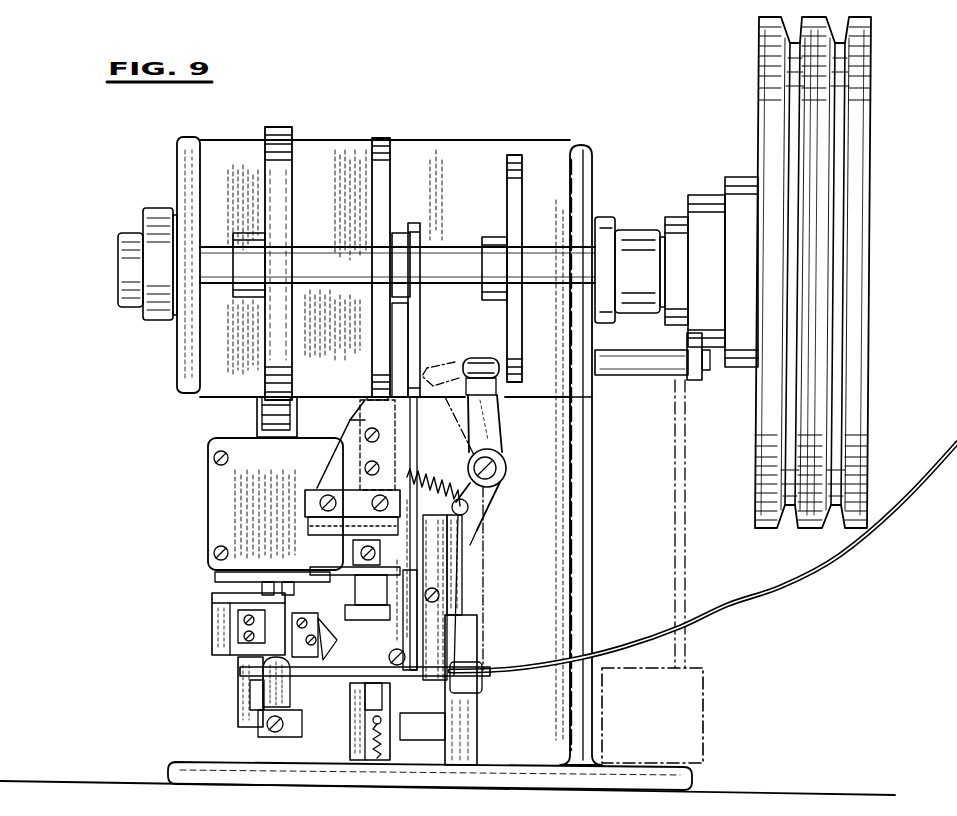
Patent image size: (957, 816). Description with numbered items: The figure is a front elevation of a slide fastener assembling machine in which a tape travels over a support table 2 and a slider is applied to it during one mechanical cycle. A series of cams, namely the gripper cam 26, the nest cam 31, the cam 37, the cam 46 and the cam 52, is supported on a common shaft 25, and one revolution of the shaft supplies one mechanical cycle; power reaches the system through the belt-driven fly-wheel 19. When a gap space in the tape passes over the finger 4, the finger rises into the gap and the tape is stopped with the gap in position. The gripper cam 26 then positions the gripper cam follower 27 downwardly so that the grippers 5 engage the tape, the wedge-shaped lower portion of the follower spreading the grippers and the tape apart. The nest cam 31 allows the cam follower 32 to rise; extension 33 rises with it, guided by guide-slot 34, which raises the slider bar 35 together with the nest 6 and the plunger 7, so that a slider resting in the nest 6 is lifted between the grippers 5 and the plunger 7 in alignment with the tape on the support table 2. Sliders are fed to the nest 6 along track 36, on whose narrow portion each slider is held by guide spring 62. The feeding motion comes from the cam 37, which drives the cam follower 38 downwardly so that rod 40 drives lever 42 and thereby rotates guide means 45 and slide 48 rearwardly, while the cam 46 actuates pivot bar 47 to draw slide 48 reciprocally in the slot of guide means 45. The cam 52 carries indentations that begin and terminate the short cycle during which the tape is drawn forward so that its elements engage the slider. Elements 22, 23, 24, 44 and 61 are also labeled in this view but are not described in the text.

The support table 2 is at (212, 600).
The finger 4 is at (290, 580).
The grippers 5 is at (288, 575).
The nest 6 is at (265, 692).
The plunger 7 is at (255, 668).
The fly-wheel 19 is at (862, 146).
The hub flange 22 is at (706, 202).
The motor (phantom) 23 is at (703, 688).
The motor shaft (phantom) 24 is at (686, 462).
The common shaft 25 is at (318, 250).
The gripper cam 26 is at (292, 177).
The gripper cam follower 27 is at (257, 414).
The nest cam 31 is at (390, 176).
The cam follower 32 is at (378, 400).
The extension 33 is at (447, 598).
The guide-slot 34 is at (400, 550).
The slider bar 35 is at (445, 712).
The track 36 is at (727, 606).
The cam 37 is at (421, 235).
The cam follower 38 is at (420, 332).
The rod 40 is at (352, 688).
The lever 42 is at (370, 717).
The spring 44 is at (371, 743).
The guide means 45 is at (240, 712).
The cam 46 is at (500, 358).
The pivot bar 47 is at (497, 423).
The slide 48 is at (287, 678).
The cam 52 is at (522, 181).
The clamp plate 61 is at (238, 642).
The guide spring 62 is at (340, 637).